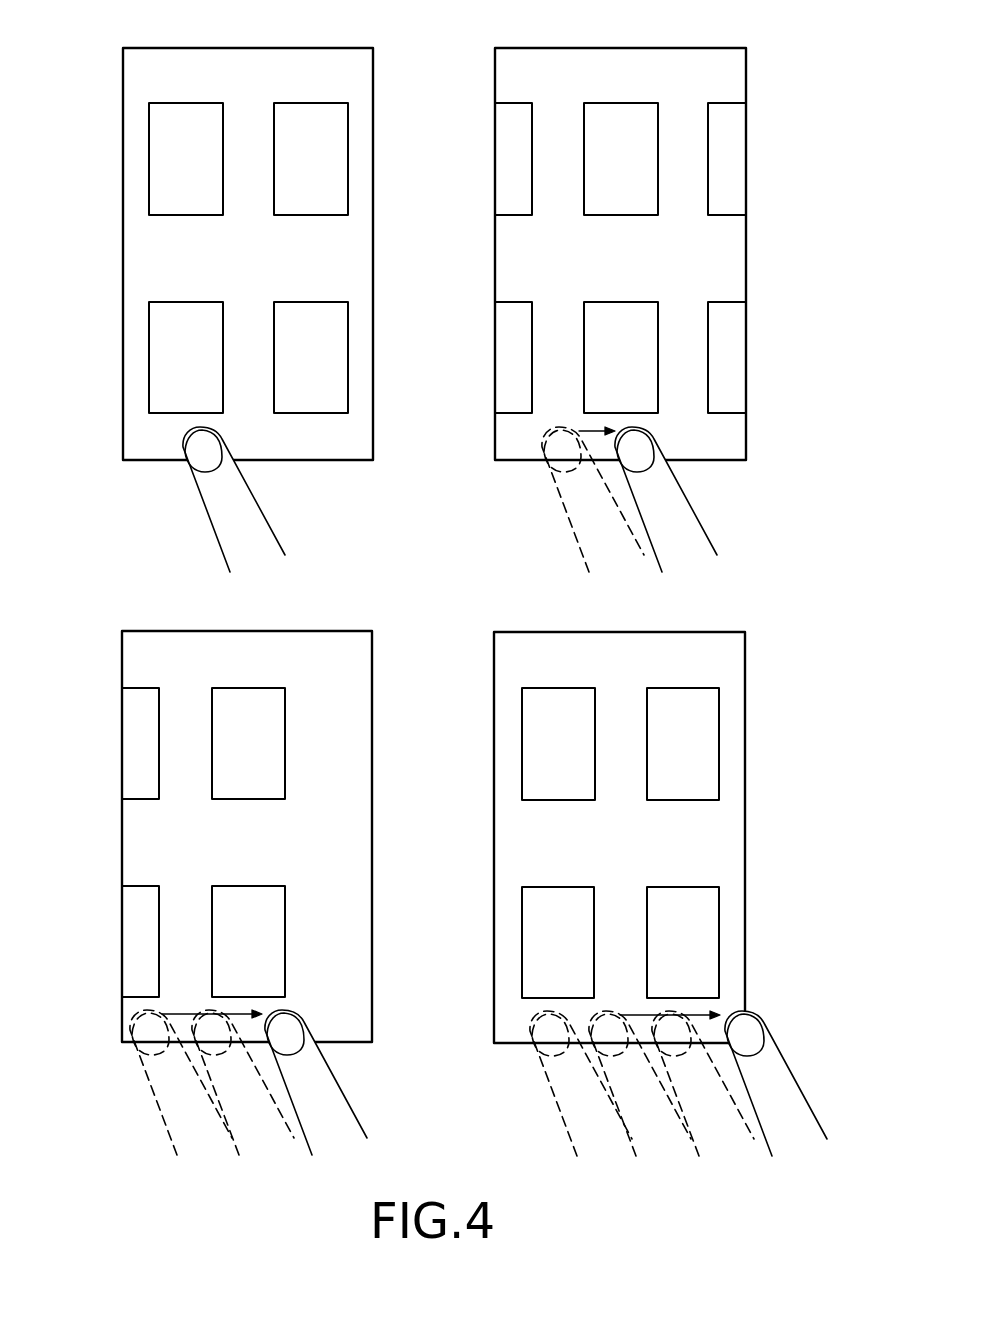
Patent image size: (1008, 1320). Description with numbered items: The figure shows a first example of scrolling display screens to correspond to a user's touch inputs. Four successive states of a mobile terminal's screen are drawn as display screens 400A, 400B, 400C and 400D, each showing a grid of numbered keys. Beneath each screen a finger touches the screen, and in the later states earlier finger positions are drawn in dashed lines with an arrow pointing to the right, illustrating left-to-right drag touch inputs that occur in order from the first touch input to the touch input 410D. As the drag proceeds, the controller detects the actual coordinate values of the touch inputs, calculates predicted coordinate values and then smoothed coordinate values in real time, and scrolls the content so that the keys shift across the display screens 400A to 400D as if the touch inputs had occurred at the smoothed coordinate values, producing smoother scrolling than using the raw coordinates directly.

The display screen 400A is at (246, 47).
The display screen 400B is at (640, 47).
The display screen 400C is at (244, 630).
The display screen 400D is at (640, 630).
The touch input 410D is at (783, 1060).